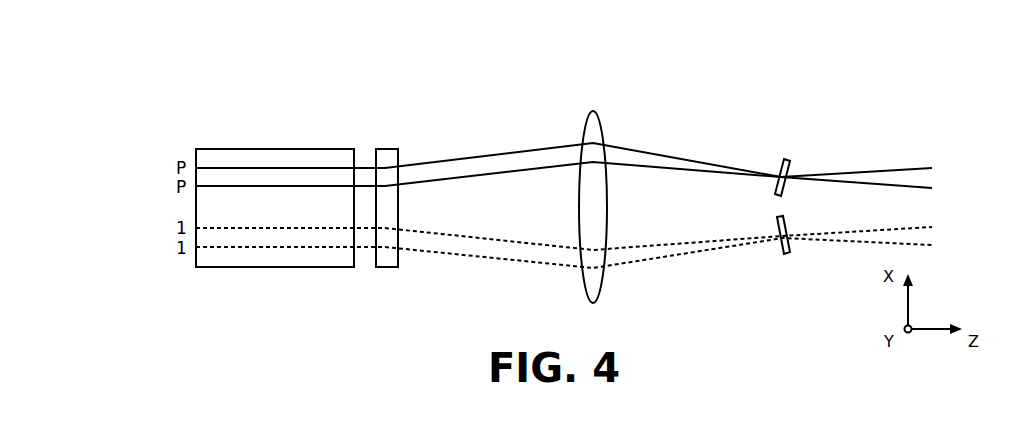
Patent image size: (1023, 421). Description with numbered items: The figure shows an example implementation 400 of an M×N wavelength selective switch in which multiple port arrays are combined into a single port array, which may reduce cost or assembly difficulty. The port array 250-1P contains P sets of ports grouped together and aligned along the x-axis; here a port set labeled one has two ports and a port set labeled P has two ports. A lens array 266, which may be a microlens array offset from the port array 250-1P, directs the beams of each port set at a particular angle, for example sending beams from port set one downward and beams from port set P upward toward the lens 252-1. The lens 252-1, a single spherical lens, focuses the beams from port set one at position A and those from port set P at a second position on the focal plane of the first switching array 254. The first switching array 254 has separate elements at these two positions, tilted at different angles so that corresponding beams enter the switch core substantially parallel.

The example implementation 400 is at (230, 48).
The port array 250-1P is at (272, 142).
The lens array 266 is at (387, 145).
The lens 252-1 is at (594, 110).
The first switching array 254 is at (784, 150).